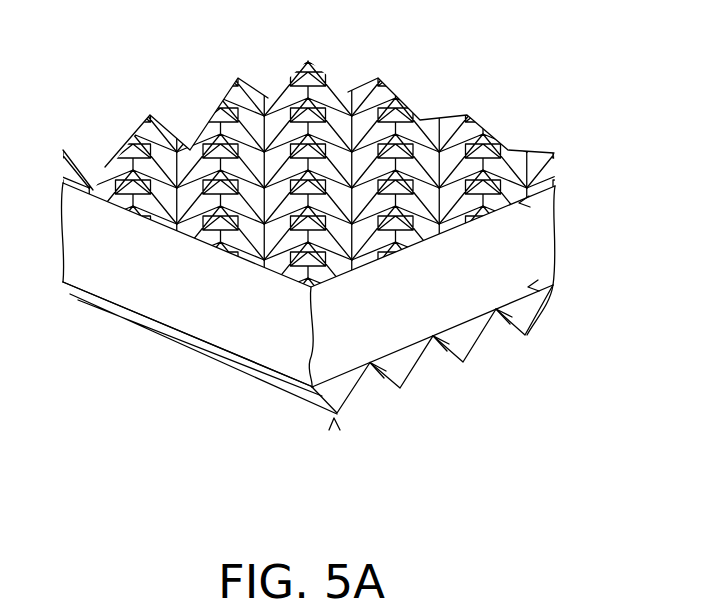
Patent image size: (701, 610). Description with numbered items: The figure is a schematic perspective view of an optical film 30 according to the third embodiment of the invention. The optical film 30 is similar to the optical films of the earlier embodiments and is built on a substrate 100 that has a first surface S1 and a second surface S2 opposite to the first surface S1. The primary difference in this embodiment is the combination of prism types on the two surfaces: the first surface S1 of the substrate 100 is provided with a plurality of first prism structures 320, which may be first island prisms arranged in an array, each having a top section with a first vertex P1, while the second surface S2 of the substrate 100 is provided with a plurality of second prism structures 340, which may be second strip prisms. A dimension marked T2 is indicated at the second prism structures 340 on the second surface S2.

The optical film 30 is at (53, 60).
The first prism structures 320 is at (288, 87).
The first vertex P1 is at (323, 81).
The first surface S1 is at (520, 203).
The substrate 100 is at (547, 231).
The second surface S2 is at (529, 287).
The second prism structures 340 is at (356, 384).
The height of prism microstructures T2 is at (334, 420).